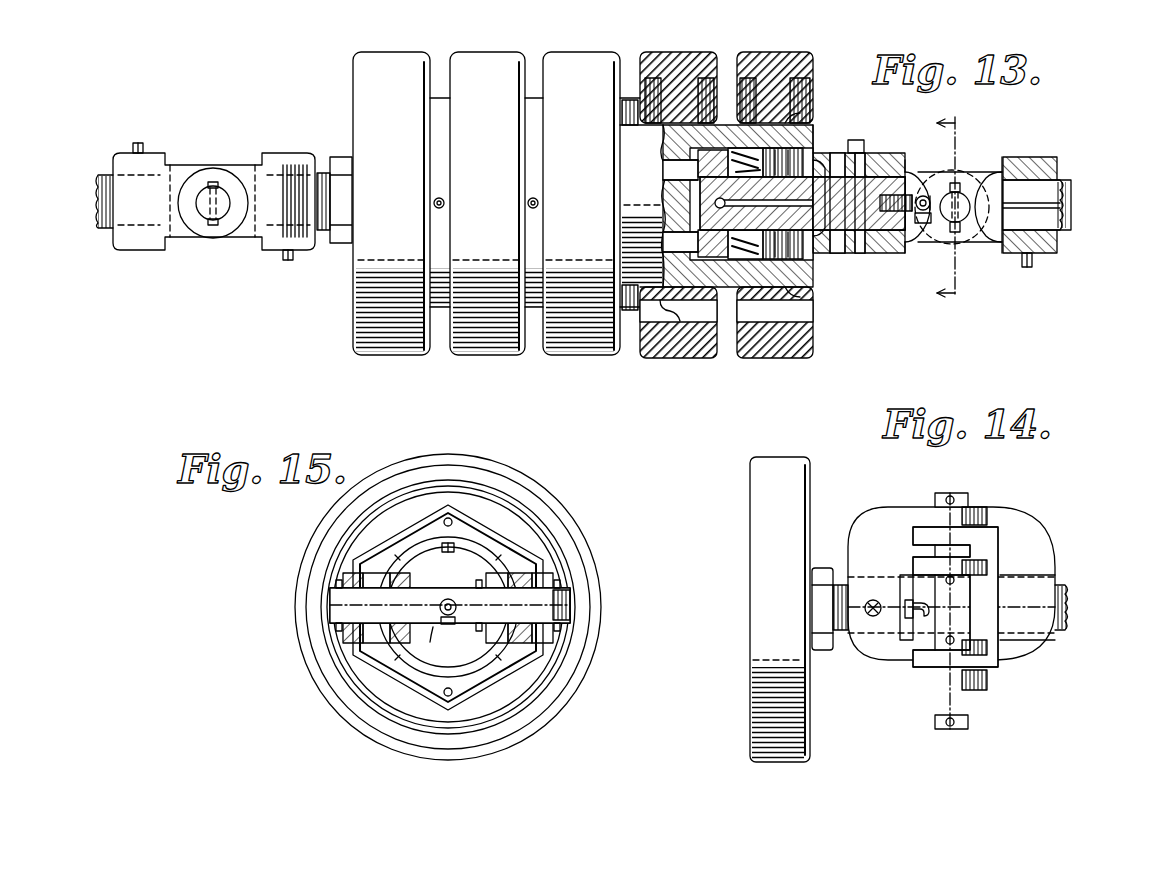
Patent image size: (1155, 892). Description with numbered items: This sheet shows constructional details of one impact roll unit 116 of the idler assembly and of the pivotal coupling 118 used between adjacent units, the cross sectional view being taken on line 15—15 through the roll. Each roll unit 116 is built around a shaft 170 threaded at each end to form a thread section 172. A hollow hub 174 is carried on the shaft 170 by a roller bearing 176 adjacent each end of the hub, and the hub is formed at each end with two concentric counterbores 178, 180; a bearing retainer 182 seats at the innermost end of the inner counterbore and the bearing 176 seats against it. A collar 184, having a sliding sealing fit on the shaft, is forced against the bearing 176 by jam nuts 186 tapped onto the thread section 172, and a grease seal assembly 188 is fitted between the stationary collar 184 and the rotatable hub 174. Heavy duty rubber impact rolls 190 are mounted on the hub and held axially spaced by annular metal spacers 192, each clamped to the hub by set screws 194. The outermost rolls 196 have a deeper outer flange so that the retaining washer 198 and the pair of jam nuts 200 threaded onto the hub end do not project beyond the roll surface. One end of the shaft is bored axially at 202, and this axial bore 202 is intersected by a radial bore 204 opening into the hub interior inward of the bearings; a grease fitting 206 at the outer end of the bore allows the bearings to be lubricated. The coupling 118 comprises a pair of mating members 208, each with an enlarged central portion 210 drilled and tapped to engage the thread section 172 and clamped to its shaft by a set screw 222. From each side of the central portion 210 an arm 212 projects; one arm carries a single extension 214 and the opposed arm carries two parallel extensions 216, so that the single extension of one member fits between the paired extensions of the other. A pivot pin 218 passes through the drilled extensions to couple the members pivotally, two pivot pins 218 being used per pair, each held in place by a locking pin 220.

In FIG. 13, the section line 15 is at (951, 207).
In FIG. 13, the impact roll unit 116 is at (446, 52).
In FIG. 13, the pivotal coupling 118 is at (222, 245).
In FIG. 14, the pivotal coupling 118 is at (1022, 530).
In FIG. 13, the shaft 170 is at (98, 195).
In FIG. 15, the shaft 170 is at (445, 640).
In FIG. 13, the thread section 172 is at (320, 175).
In FIG. 14, the thread section 172 is at (848, 590).
In FIG. 13, the hollow hub 174 is at (688, 268).
In FIG. 15, the hollow hub 174 is at (505, 565).
In FIG. 13, the roller bearing 176 is at (790, 270).
In FIG. 13, the counterbore 178 is at (772, 95).
In FIG. 13, the counterbore 180 is at (812, 160).
In FIG. 13, the bearing retainer 182 is at (720, 163).
In FIG. 13, the collar 184 is at (802, 203).
In FIG. 13, the jam nut 186 is at (338, 245).
In FIG. 14, the jam nut 186 is at (822, 568).
In FIG. 13, the grease seal assembly 188 is at (810, 260).
In FIG. 13, the rubber impact roll 190 is at (655, 358).
In FIG. 13, the annular metal spacer 192 is at (538, 108).
In FIG. 13, the set screw 194 is at (632, 125).
In FIG. 13, the outermost roll 196 is at (770, 358).
In FIG. 14, the outermost roll 196 is at (812, 485).
In FIG. 15, the outermost roll 196 is at (560, 510).
In FIG. 13, the washer 198 is at (785, 310).
In FIG. 15, the washer 198 is at (405, 515).
In FIG. 13, the jam nut 200 is at (808, 287).
In FIG. 15, the jam nut 200 is at (465, 533).
In FIG. 13, the axial bore 202 is at (920, 178).
In FIG. 13, the radial bore 204 is at (702, 233).
In FIG. 13, the grease fitting 206 is at (925, 225).
In FIG. 14, the grease fitting 206 is at (919, 618).
In FIG. 15, the grease fitting 206 is at (449, 598).
In FIG. 13, the mating member 208 is at (282, 153).
In FIG. 14, the mating member 208 is at (880, 675).
In FIG. 13, the central portion 210 is at (890, 160).
In FIG. 14, the central portion 210 is at (1045, 597).
In FIG. 14, the arm 212 is at (1030, 555).
In FIG. 13, the single extension 214 is at (978, 243).
In FIG. 14, the single extension 214 is at (985, 535).
In FIG. 15, the single extension 214 is at (535, 565).
In FIG. 13, the paired extension 216 is at (960, 246).
In FIG. 14, the paired extension 216 is at (975, 650).
In FIG. 15, the paired extension 216 is at (540, 643).
In FIG. 13, the pivot pin 218 is at (962, 198).
In FIG. 14, the pivot pin 218 is at (933, 497).
In FIG. 15, the pivot pin 218 is at (572, 607).
In FIG. 13, the locking pin 220 is at (958, 183).
In FIG. 14, the locking pin 220 is at (955, 498).
In FIG. 15, the locking pin 220 is at (560, 633).
In FIG. 13, the set screw 222 is at (143, 150).
In FIG. 14, the set screw 222 is at (869, 612).
In FIG. 15, the set screw 222 is at (455, 545).